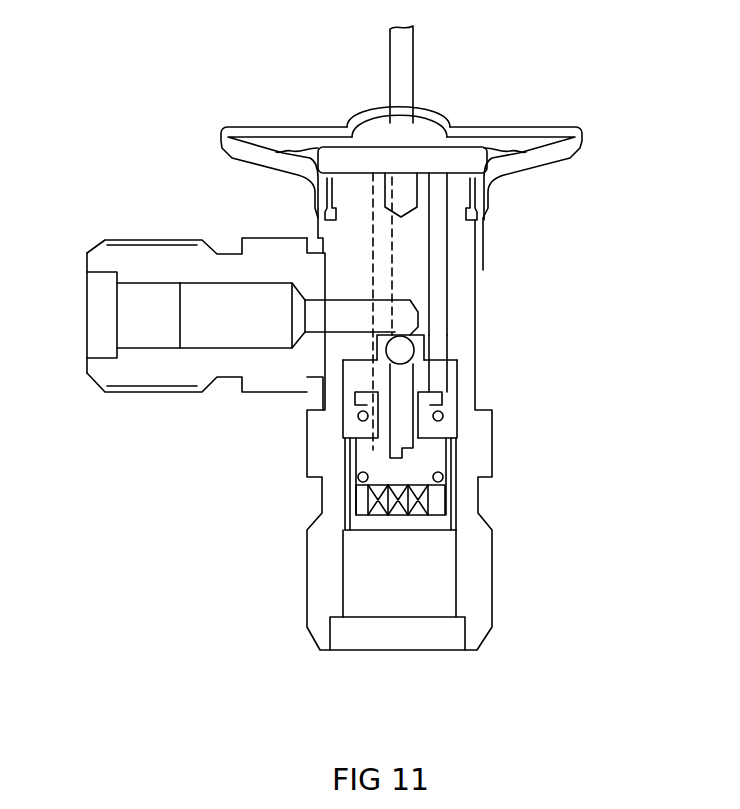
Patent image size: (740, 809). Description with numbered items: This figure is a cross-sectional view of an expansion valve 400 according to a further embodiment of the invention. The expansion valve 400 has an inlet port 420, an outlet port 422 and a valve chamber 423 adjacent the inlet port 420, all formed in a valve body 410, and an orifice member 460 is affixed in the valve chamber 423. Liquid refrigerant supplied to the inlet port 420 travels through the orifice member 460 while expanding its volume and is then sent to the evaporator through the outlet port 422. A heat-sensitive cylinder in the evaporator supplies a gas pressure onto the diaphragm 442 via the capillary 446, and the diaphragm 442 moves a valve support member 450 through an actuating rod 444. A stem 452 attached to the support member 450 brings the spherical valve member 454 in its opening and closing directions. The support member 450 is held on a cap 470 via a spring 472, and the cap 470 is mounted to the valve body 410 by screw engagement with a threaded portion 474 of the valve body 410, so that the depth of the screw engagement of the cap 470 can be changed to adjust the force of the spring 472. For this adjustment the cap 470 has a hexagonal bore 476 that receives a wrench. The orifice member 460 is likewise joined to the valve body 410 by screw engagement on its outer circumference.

The expansion valve 400 is at (597, 324).
The valve body 410 is at (480, 435).
The inlet port 420 is at (398, 590).
The outlet port 422 is at (147, 317).
The valve chamber 423 is at (398, 480).
The diaphragm 442 is at (494, 134).
The actuating rod 444 is at (440, 273).
The capillary 446 is at (407, 56).
The valve support member 450 is at (378, 430).
The stem 452 is at (420, 447).
The spherical valve member 454 is at (404, 355).
The orifice member 460 is at (432, 338).
The cap 470 is at (440, 505).
The spring 472 is at (446, 481).
The threaded portion 474 is at (365, 483).
The hexagonal bore 476 is at (376, 500).